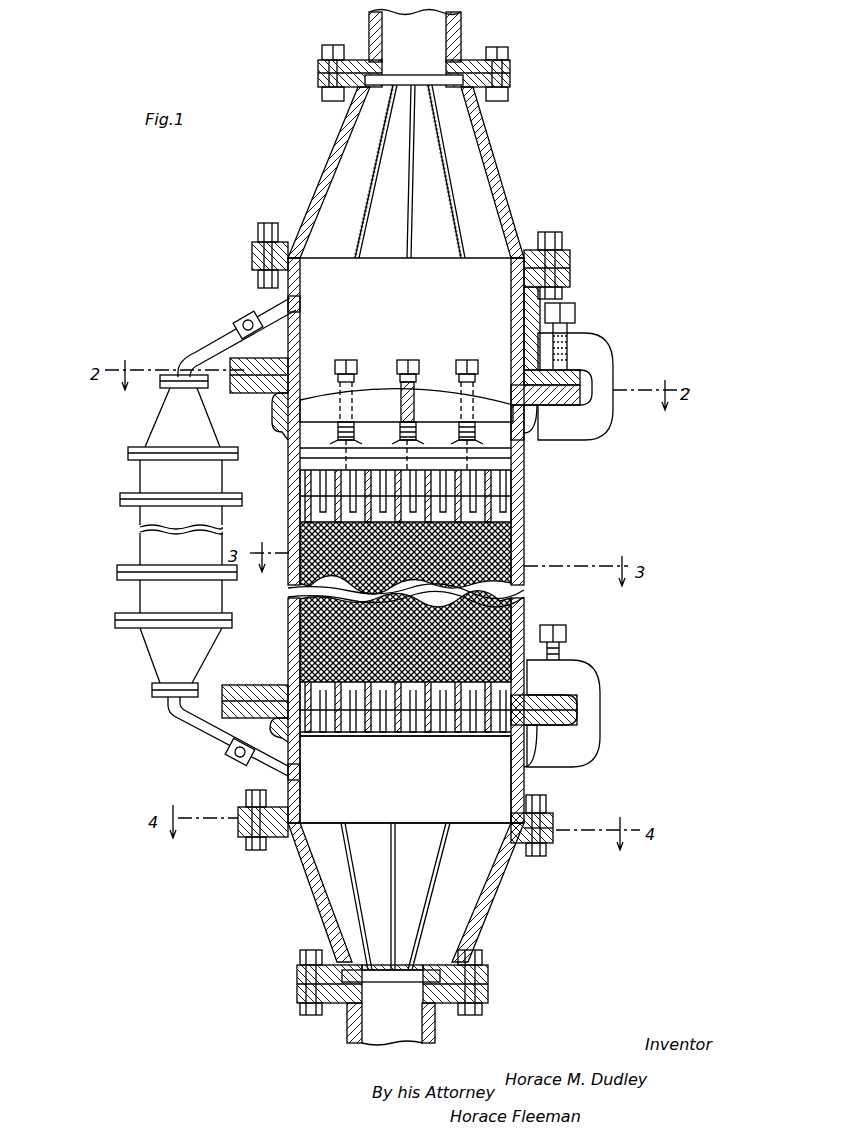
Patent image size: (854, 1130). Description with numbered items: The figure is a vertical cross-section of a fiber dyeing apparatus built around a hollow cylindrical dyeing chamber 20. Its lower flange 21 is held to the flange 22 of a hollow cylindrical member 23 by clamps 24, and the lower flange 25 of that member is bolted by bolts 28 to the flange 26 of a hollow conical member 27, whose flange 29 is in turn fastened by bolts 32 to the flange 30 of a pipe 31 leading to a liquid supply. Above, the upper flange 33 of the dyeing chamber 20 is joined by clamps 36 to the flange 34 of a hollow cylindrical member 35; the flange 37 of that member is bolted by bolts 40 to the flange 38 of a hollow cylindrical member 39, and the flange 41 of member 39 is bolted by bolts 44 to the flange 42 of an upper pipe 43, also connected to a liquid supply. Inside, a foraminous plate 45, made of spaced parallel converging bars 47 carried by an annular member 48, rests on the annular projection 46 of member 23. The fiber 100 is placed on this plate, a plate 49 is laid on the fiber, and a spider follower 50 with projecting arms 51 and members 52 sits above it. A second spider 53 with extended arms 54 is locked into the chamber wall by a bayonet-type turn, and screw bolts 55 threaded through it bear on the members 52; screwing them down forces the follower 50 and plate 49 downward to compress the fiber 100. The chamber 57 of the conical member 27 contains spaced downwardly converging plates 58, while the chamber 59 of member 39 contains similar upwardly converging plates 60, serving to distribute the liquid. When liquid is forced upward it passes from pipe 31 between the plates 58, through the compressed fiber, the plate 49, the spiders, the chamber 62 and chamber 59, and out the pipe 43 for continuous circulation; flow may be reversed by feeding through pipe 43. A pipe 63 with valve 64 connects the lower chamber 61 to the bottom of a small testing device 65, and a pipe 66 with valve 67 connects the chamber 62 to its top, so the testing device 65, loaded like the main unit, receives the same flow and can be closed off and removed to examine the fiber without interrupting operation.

The dyeing chamber 20 is at (517, 540).
The lower flange of dyeing chamber 21 is at (542, 690).
The flange of hollow cylindrical member 22 is at (560, 730).
The hollow cylindrical member 23 is at (510, 784).
The clamps 24 is at (602, 697).
The lower flange of member 23 25 is at (555, 823).
The flange of conical member 26 is at (556, 840).
The hollow conical member 27 is at (470, 895).
The bolts 28 is at (256, 850).
The flange of member 27 29 is at (490, 980).
The flange of pipe 31 30 is at (490, 990).
The pipe 31 is at (352, 1030).
The bolts 32 is at (311, 1012).
The upper flange of dyeing chamber 33 is at (548, 408).
The flange of member 35 34 is at (566, 352).
The hollow cylindrical member 35 is at (526, 322).
The clamps 36 is at (598, 370).
The flange of member 35 37 is at (572, 276).
The flange of member 39 38 is at (562, 257).
The hollow cylindrical member 39 is at (490, 180).
The bolts 40 is at (268, 224).
The flange of member 39 41 is at (512, 88).
The flange of pipe 43 42 is at (508, 72).
The pipe 43 is at (455, 30).
The bolts 44 is at (333, 95).
The foraminous plate 45 is at (390, 736).
The annular projection 46 is at (302, 747).
The bars 47 is at (412, 476).
The annular member 48 is at (300, 482).
The plate 49 is at (377, 474).
The spider follower 50 is at (345, 452).
The projecting arms 51 is at (505, 470).
The members 52 is at (362, 444).
The spider 53 is at (372, 395).
The extended arms 54 is at (282, 410).
The screw bolts 55 is at (343, 360).
The chamber of member 27 57 is at (377, 909).
The downwardly converging plates 58 is at (392, 880).
The chamber of member 39 59 is at (414, 142).
The upwardly converging plates 60 is at (408, 236).
The chamber 61 is at (405, 779).
The chamber 62 is at (406, 421).
The pipe 63 is at (200, 738).
The valve 64 is at (234, 760).
The testing device 65 is at (150, 532).
The pipe 66 is at (212, 345).
The valve 67 is at (246, 318).
The fiber 100 is at (520, 605).